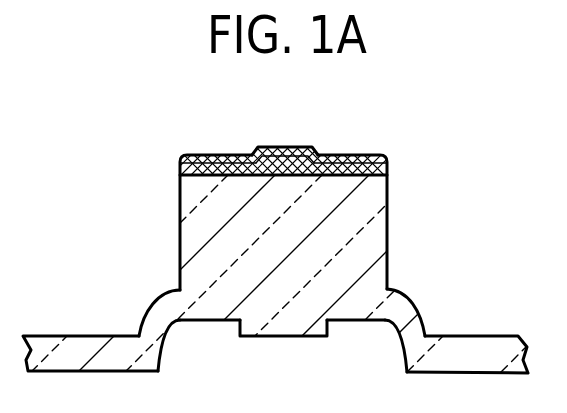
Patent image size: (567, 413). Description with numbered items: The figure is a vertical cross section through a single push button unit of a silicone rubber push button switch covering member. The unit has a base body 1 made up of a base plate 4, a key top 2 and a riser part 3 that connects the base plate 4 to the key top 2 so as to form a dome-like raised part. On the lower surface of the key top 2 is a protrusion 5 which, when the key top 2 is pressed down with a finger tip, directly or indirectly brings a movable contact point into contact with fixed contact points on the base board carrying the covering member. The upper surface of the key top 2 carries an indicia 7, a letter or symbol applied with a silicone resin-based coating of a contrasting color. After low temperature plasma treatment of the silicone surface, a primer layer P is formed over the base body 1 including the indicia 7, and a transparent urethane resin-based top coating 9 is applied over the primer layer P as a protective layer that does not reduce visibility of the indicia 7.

The base body 1 is at (473, 208).
The key top 2 is at (345, 231).
The riser part 3 is at (410, 304).
The base plate 4 is at (463, 350).
The protrusion 5 is at (285, 327).
The indicia 7 is at (299, 164).
The top coating 9 is at (358, 162).
The primer layer P is at (384, 171).